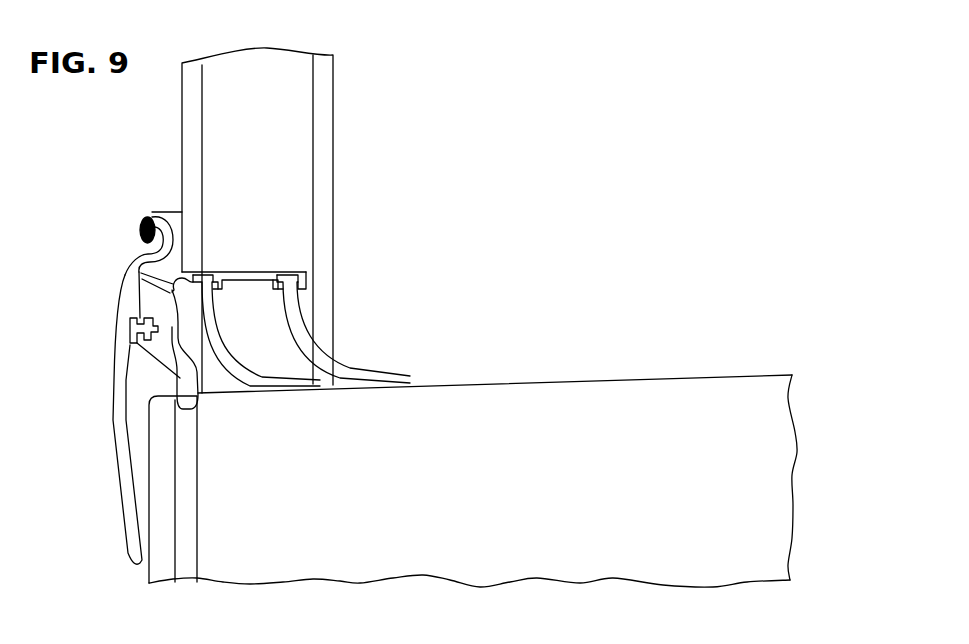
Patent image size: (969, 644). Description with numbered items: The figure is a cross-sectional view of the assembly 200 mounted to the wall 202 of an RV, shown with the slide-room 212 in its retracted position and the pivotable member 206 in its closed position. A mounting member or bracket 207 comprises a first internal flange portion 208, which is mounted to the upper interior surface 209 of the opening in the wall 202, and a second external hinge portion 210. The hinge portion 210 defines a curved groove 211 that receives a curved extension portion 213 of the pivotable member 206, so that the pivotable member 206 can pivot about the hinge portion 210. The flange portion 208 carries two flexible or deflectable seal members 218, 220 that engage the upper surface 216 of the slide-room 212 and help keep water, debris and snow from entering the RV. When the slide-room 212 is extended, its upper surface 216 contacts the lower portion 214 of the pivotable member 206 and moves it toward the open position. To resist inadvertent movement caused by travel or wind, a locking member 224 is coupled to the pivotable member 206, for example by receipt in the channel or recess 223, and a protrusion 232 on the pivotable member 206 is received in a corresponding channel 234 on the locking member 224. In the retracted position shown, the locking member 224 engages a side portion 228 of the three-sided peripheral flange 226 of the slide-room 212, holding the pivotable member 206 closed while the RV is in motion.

The assembly 200 is at (458, 152).
The wall 202 is at (335, 138).
The pivotable member 206 is at (113, 428).
The mounting member or bracket 207 is at (218, 272).
The flange portion 208 is at (252, 272).
The upper interior surface 209 is at (286, 272).
The hinge portion 210 is at (153, 212).
The curved groove 211 is at (144, 218).
The slide-room 212 is at (638, 493).
The curved extension portion 213 is at (164, 242).
The lower portion 214 is at (121, 483).
The upper surface 216 is at (658, 378).
The seal member 218 is at (318, 365).
The seal member 220 is at (221, 346).
The channel or recess 223 is at (130, 326).
The locking member 224 is at (166, 369).
The peripheral flange 226 is at (157, 555).
The side portion 228 is at (155, 504).
The protrusion 232 is at (131, 315).
The channel 234 is at (158, 326).